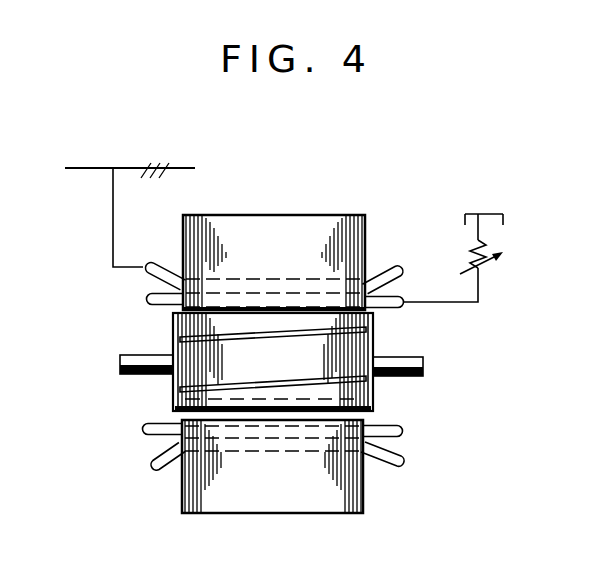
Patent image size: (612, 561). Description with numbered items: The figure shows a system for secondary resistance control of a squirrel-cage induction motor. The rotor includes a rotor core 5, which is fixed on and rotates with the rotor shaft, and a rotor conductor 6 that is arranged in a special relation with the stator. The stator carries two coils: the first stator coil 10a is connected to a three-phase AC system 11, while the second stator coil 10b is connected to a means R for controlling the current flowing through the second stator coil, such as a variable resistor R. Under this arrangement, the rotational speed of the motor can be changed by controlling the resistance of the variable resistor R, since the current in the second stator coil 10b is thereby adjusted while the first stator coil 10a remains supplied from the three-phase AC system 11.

The rotor core 5 is at (182, 397).
The rotor conductor 6 is at (325, 381).
The first stator coil 10a is at (148, 277).
The second stator coil 10b is at (398, 308).
The three-phase AC system 11 is at (134, 168).
The variable resistor R is at (488, 264).